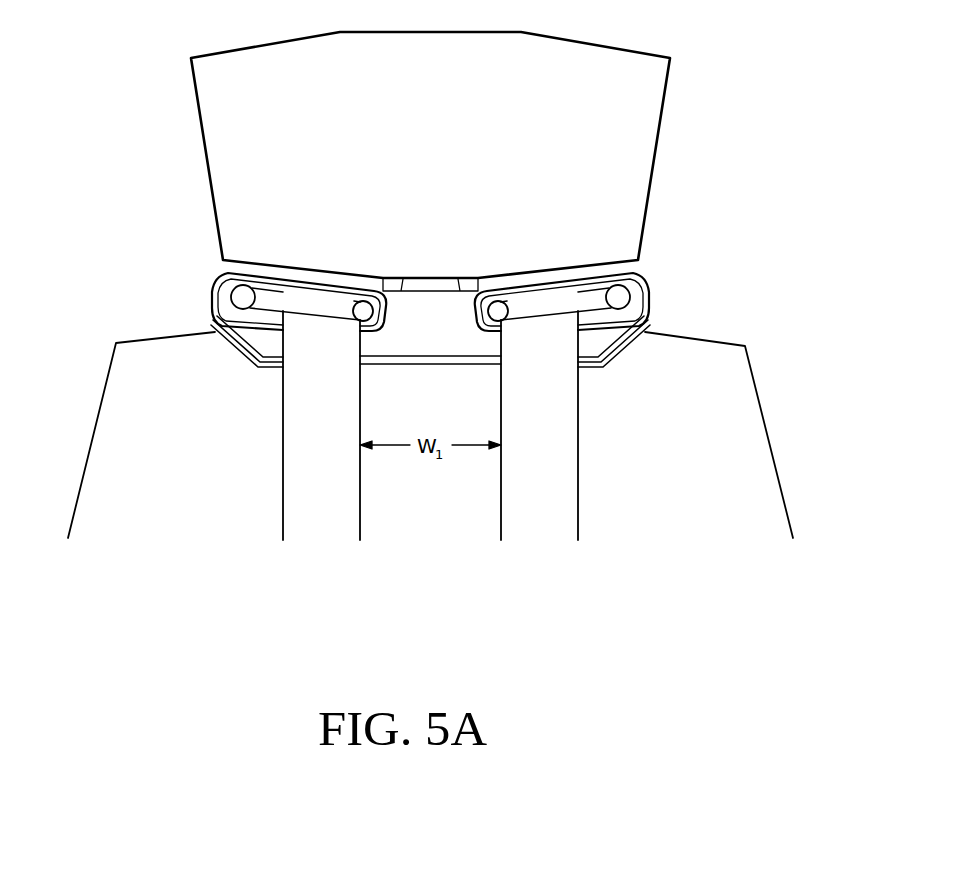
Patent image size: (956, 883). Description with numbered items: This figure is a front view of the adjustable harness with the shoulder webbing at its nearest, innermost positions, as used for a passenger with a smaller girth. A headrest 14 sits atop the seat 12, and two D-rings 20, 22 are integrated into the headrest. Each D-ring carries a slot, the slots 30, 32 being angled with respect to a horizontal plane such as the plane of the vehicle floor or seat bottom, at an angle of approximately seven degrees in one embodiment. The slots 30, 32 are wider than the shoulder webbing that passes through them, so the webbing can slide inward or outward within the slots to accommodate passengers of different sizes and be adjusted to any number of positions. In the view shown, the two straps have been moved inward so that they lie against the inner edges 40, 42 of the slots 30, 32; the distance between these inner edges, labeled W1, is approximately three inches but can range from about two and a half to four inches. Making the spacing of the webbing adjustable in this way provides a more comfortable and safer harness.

The seat 12 is at (768, 413).
The headrest 14 is at (661, 149).
The D-ring 20 is at (305, 297).
The D-ring 22 is at (580, 298).
The slot 30 is at (272, 302).
The slot 32 is at (588, 303).
The inner edge 40 is at (375, 312).
The inner edge 42 is at (488, 316).